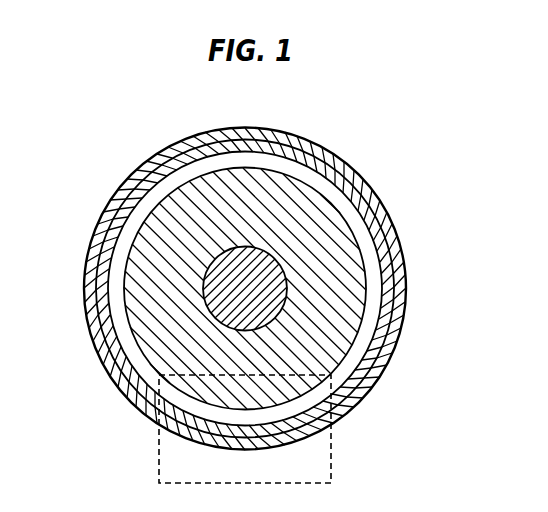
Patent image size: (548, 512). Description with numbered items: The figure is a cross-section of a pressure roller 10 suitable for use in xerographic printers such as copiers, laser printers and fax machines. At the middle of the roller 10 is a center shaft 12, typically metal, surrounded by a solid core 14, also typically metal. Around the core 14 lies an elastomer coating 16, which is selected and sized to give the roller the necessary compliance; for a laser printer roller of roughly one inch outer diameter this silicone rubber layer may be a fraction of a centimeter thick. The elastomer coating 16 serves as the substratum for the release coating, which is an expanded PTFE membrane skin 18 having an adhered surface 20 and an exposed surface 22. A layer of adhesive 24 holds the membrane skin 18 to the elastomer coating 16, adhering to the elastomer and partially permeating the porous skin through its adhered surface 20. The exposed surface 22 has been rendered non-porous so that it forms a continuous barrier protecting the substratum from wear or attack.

The pressure roller 10 is at (313, 122).
The center shaft 12 is at (274, 242).
The solid core 14 is at (330, 250).
The elastomer coating 16 is at (383, 237).
The expanded PTFE membrane skin 18 is at (411, 283).
The adhered surface 20 is at (362, 390).
The exposed surface 22 is at (388, 358).
The layer of adhesive 24 is at (399, 321).